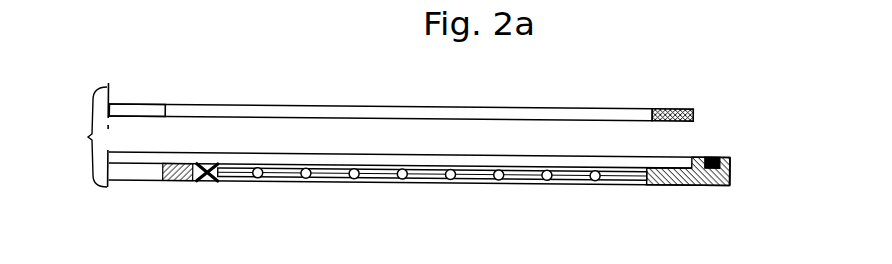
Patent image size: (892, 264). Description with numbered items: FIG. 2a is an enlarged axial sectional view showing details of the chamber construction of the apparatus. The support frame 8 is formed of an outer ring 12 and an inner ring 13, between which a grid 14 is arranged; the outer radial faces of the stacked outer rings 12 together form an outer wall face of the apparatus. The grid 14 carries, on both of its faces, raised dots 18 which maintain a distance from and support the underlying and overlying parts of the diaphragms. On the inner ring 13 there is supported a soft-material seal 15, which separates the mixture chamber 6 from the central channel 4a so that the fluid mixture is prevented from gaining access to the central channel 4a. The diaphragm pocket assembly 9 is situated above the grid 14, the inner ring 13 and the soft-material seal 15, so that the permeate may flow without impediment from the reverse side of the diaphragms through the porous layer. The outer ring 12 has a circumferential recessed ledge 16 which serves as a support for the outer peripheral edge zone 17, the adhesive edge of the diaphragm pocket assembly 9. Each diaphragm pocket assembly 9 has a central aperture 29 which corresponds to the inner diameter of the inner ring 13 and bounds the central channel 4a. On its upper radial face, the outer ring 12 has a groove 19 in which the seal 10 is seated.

The central channel 4a is at (85, 173).
The mixture chamber 6 is at (431, 181).
The support frame 8 is at (628, 192).
The diaphragm pocket assembly 9 is at (614, 112).
The seal 10 is at (714, 161).
The outer ring 12 is at (732, 176).
The inner ring 13 is at (177, 182).
The grid 14 is at (373, 177).
The soft-material seal 15 is at (208, 185).
The circumferential recessed ledge 16 is at (673, 163).
The outer peripheral edge zone 17 is at (672, 110).
The raised dots 18 is at (306, 166).
The groove 19 is at (710, 182).
The central aperture 29 is at (137, 108).